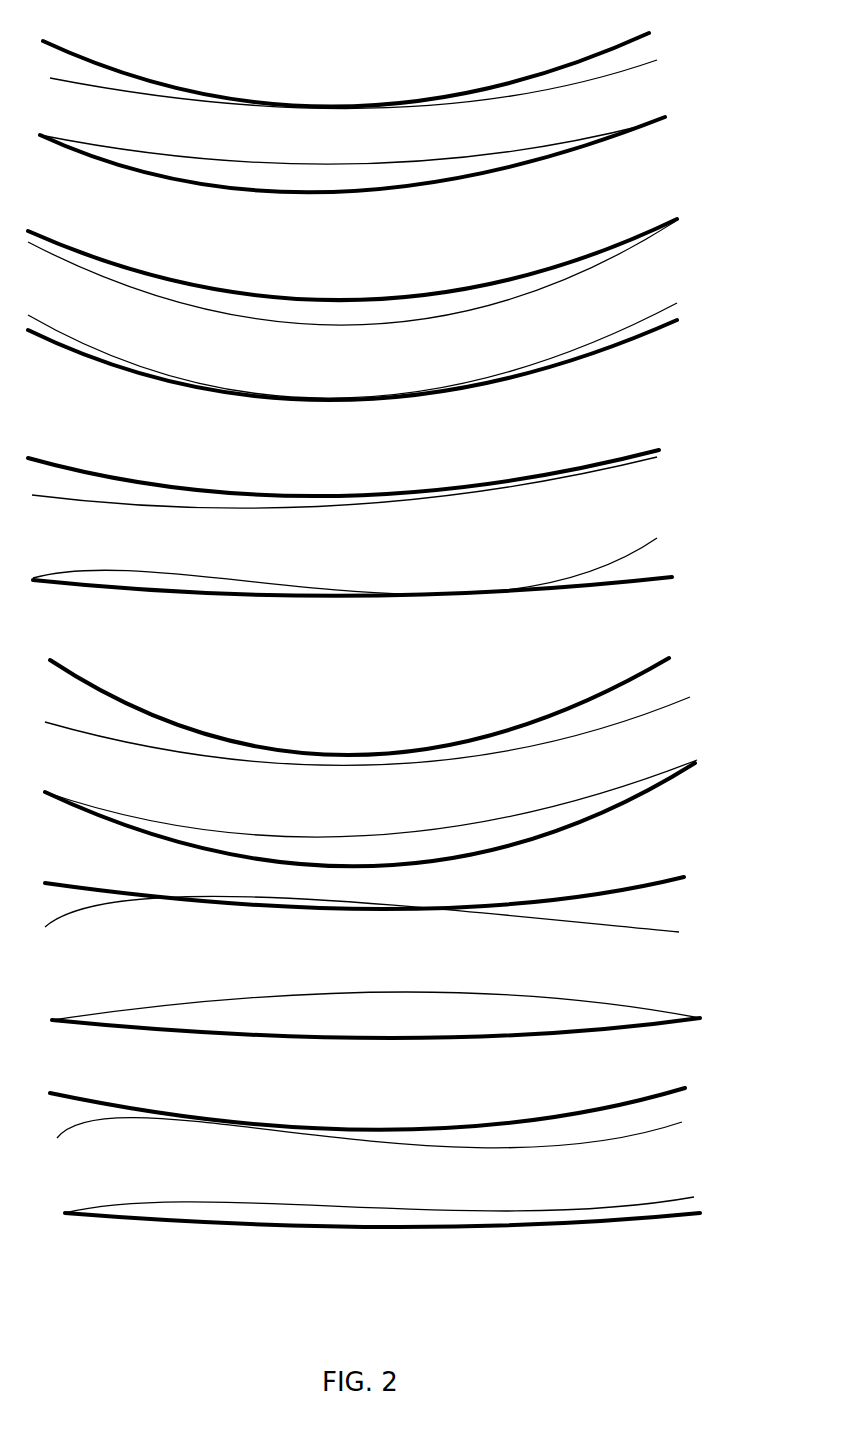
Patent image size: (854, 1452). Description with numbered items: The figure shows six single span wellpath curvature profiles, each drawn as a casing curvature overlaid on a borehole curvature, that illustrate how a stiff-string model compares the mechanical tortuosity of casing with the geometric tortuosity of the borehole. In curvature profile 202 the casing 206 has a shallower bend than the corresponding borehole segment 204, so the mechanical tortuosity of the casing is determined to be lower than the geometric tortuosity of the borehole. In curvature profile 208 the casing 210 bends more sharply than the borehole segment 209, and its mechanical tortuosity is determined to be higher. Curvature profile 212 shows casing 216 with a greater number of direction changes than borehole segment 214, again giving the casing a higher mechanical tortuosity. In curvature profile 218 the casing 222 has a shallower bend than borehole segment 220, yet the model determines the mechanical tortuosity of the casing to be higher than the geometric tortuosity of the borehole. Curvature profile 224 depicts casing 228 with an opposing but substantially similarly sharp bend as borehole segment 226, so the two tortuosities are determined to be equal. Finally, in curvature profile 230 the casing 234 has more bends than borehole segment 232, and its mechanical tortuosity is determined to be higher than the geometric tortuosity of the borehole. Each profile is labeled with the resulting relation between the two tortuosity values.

The curvature profile 202 is at (352, 102).
The borehole segment 204 is at (88, 60).
The casing 206 is at (110, 88).
The curvature profile 208 is at (352, 292).
The borehole segment 209 is at (110, 268).
The casing 210 is at (145, 302).
The curvature profile 212 is at (350, 500).
The borehole segment 214 is at (62, 465).
The casing 216 is at (80, 488).
The curvature profile 218 is at (371, 748).
The borehole segment 220 is at (152, 718).
The casing 222 is at (190, 748).
The curvature profile 224 is at (383, 926).
The borehole segment 226 is at (60, 885).
The casing 228 is at (102, 920).
The curvature profile 230 is at (382, 1128).
The borehole segment 232 is at (100, 1102).
The casing 234 is at (125, 1130).